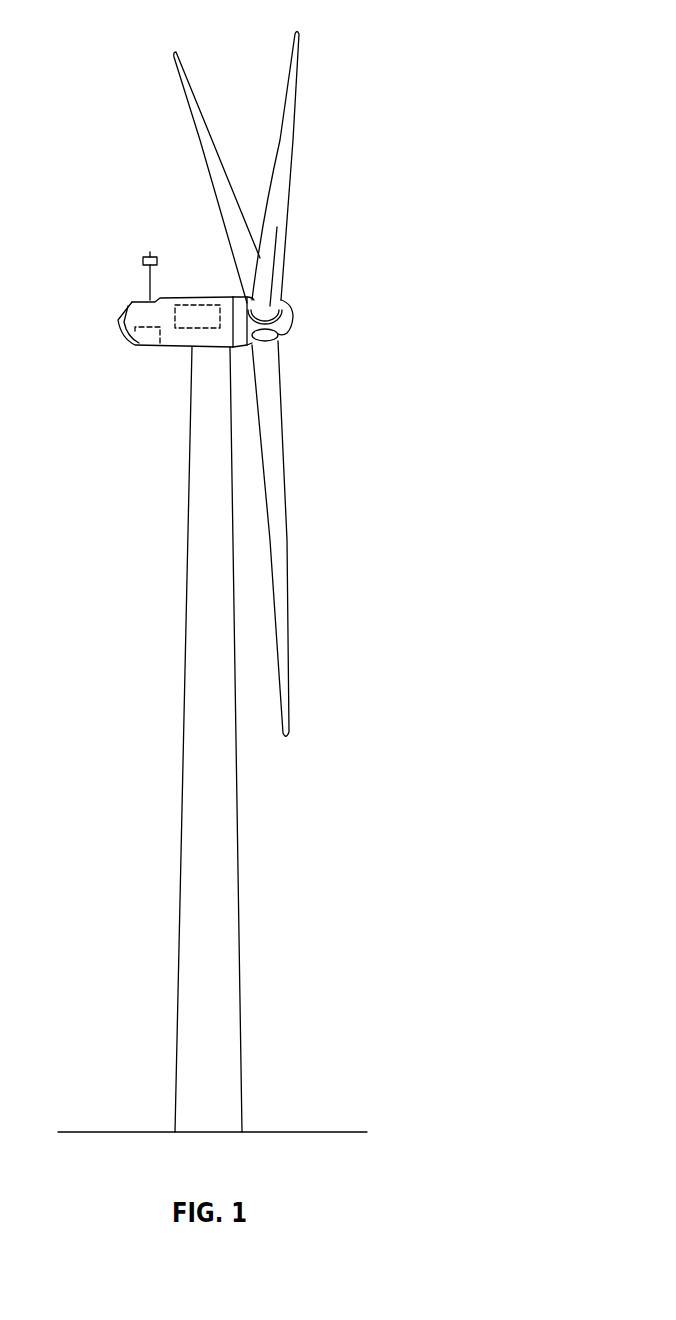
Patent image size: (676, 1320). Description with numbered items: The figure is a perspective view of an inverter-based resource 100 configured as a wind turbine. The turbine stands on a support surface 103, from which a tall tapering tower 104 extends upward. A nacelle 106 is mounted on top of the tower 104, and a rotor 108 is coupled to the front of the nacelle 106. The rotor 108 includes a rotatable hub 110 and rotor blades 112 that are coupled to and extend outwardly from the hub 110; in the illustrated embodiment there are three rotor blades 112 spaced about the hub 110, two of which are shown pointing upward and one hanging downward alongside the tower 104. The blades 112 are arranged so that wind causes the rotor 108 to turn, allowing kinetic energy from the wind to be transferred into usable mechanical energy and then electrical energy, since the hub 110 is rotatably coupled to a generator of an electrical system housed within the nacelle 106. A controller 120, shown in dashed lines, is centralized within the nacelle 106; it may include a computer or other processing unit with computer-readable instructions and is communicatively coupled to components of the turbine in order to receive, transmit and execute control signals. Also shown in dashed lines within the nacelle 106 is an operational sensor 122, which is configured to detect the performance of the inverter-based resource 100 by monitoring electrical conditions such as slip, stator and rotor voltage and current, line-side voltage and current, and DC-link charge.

The inverter-based resource 100 is at (417, 105).
The support surface 103 is at (132, 1132).
The tower 104 is at (215, 833).
The nacelle 106 is at (173, 350).
The rotor 108 is at (300, 295).
The rotatable hub 110 is at (292, 327).
The rotor blade 112 is at (287, 117).
The controller 120 is at (207, 305).
The operational sensor 122 is at (140, 338).